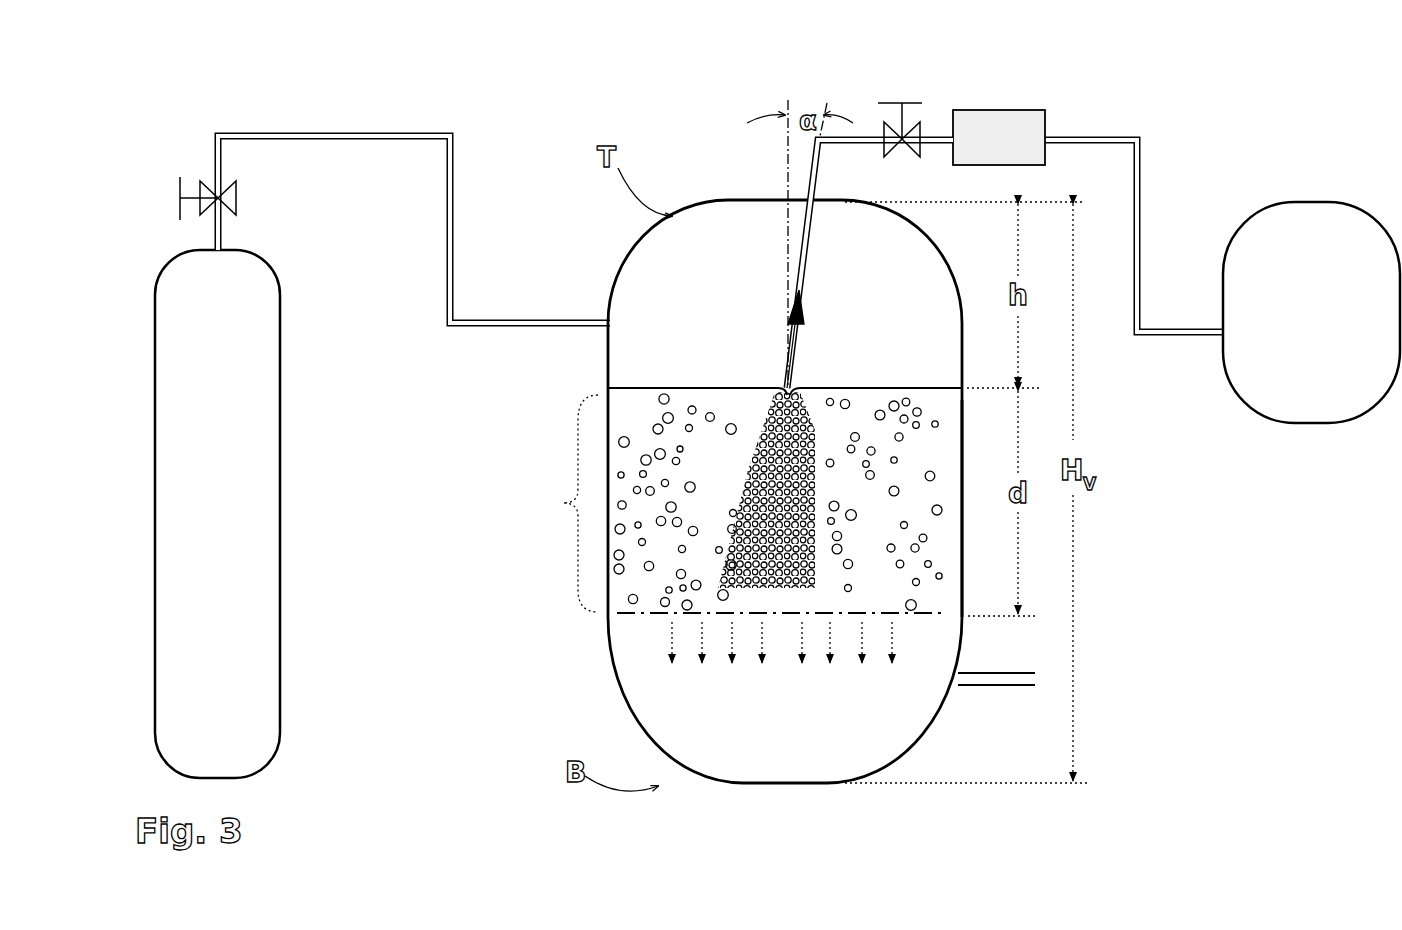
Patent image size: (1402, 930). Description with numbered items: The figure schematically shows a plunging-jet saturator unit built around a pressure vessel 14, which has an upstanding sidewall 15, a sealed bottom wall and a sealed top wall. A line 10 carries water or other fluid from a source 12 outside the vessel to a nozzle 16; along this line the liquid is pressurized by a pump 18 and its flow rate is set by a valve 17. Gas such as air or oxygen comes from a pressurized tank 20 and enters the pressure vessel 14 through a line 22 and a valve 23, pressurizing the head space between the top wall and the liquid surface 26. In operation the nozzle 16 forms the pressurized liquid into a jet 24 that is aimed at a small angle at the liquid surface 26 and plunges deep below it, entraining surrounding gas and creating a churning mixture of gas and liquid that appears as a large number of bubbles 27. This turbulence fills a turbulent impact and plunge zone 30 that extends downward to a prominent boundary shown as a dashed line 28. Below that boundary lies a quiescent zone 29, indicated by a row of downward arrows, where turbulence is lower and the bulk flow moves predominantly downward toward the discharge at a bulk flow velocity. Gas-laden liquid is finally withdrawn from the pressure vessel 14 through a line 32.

The line 10 is at (810, 265).
The source 12 is at (1338, 331).
The pressure vessel 14 is at (777, 732).
The upstanding sidewall 15 is at (963, 532).
The nozzle 16 is at (790, 318).
The valve 17 is at (906, 160).
The pump 18 is at (1017, 154).
The pressurized tank 20 is at (228, 487).
The line 22 is at (433, 141).
The valve 23 is at (200, 188).
The jet 24 is at (787, 363).
The liquid surface 26 is at (641, 389).
The bubbles 27 is at (640, 452).
The boundary 28 is at (645, 613).
The quiescent zone 29 is at (652, 643).
The turbulent impact and plunge zone 30 is at (666, 502).
The line 32 is at (1025, 688).